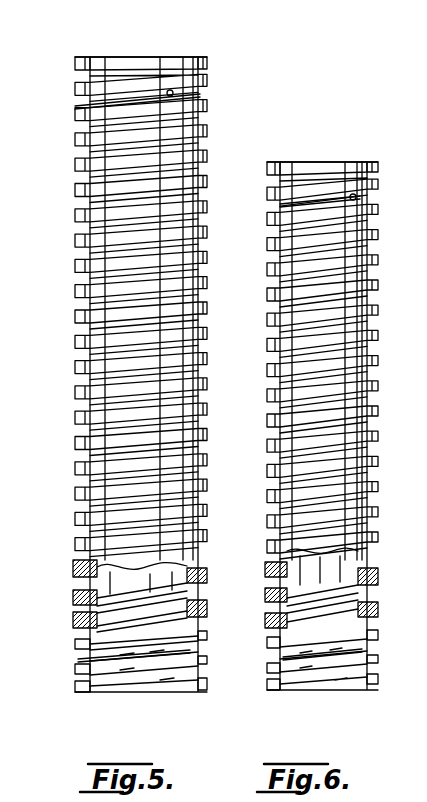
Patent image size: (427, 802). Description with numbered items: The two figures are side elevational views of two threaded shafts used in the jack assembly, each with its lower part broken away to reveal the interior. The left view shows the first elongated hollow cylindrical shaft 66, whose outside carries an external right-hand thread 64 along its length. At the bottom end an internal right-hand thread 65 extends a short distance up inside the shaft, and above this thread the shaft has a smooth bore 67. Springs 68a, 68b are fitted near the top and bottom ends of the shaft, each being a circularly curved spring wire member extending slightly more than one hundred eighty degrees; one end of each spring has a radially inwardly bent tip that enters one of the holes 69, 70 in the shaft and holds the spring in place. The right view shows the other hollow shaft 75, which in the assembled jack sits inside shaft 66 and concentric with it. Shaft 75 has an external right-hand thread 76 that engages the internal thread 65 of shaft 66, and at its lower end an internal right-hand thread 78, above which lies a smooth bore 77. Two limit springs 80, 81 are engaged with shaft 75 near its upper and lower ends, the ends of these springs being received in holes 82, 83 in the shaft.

In FIG. 5, the external right-hand thread 64 is at (200, 334).
In FIG. 5, the first elongated hollow cylindrical shaft 66 is at (171, 38).
In FIG. 5, the spring 68a is at (76, 105).
In FIG. 5, the hole 69 is at (176, 92).
In FIG. 5, the smooth bore 67 is at (80, 578).
In FIG. 5, the internal right-hand thread 65 is at (160, 618).
In FIG. 5, the hole 70 is at (207, 648).
In FIG. 5, the spring 68b is at (85, 655).
In FIG. 6, the external right-hand thread 76 is at (378, 408).
In FIG. 6, the hollow shaft 75 is at (327, 162).
In FIG. 6, the limit spring 80 is at (280, 204).
In FIG. 6, the hole 82 is at (358, 196).
In FIG. 6, the smooth bore 77 is at (302, 567).
In FIG. 6, the internal right-hand thread 78 is at (338, 608).
In FIG. 6, the hole 83 is at (365, 647).
In FIG. 6, the limit spring 81 is at (283, 655).